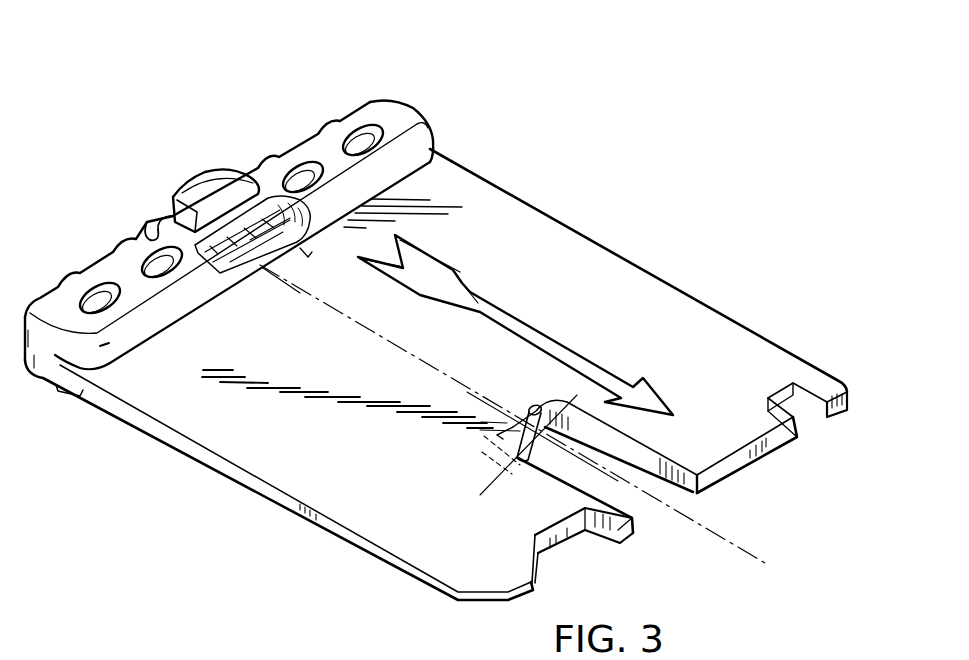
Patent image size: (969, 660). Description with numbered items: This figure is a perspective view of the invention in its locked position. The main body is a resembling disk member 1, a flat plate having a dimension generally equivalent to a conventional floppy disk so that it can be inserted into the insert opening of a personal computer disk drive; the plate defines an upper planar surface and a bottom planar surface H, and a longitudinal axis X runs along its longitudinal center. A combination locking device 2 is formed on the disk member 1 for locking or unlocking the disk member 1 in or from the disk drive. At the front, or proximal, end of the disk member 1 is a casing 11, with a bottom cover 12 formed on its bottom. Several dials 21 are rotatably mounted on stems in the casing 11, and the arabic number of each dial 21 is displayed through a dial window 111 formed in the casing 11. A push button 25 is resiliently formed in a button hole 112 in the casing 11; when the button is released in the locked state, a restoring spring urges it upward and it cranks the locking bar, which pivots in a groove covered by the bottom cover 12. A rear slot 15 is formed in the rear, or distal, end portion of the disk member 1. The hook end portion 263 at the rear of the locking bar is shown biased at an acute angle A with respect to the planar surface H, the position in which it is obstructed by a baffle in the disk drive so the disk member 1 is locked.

The resembling disk member 1 is at (603, 248).
The combination locking device 2 is at (268, 152).
The casing 11 is at (366, 108).
The dial window 111 is at (374, 130).
The button hole 112 is at (153, 219).
The bottom cover 12 is at (59, 393).
The rear slot 15 is at (650, 452).
The dial 21 is at (117, 248).
The push button 25 is at (200, 190).
The hook end portion 263 is at (608, 468).
The acute angle A is at (551, 445).
The longitudinal axis X is at (432, 370).
The bottom planar surface H is at (278, 476).